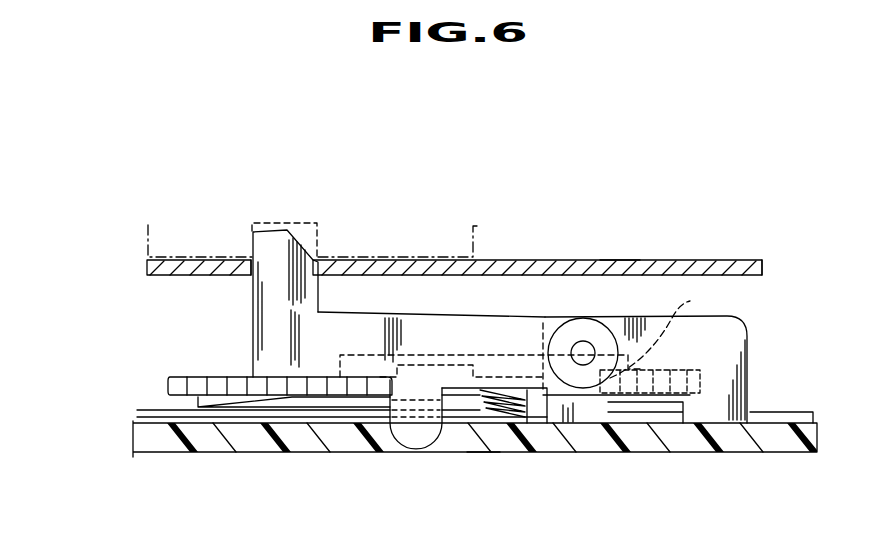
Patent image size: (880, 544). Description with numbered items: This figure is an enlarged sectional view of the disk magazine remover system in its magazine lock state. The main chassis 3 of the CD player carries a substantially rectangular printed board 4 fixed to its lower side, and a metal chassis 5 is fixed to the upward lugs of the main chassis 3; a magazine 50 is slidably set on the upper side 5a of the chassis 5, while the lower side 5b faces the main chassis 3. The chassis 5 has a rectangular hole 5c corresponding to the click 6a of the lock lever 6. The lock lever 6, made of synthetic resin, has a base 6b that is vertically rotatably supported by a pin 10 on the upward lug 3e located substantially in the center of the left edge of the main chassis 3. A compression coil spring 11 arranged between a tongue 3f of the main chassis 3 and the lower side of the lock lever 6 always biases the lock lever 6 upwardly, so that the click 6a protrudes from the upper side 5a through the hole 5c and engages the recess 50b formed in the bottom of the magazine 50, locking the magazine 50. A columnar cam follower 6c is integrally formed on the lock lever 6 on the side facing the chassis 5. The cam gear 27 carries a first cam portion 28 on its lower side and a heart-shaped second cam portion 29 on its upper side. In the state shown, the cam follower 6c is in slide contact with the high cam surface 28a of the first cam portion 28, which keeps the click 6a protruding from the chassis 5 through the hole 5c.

The main chassis 3 is at (803, 413).
The upward lug 3e is at (736, 342).
The tongue 3f is at (507, 420).
The printed board 4 is at (263, 442).
The chassis 5 is at (705, 260).
The upper side 5a is at (616, 260).
The lower side 5b is at (751, 276).
The rectangular hole 5c is at (248, 258).
The lock lever 6 is at (418, 313).
The click 6a is at (268, 228).
The base 6b is at (508, 327).
The cam follower 6c is at (415, 440).
The pin 10 is at (583, 365).
The compression coil spring 11 is at (516, 452).
The cam gear 27 is at (167, 380).
The first cam portion 28 is at (263, 402).
The high cam surface 28a is at (337, 398).
The second cam portion 29 is at (690, 301).
The magazine 50 is at (477, 232).
The recess 50b is at (297, 223).